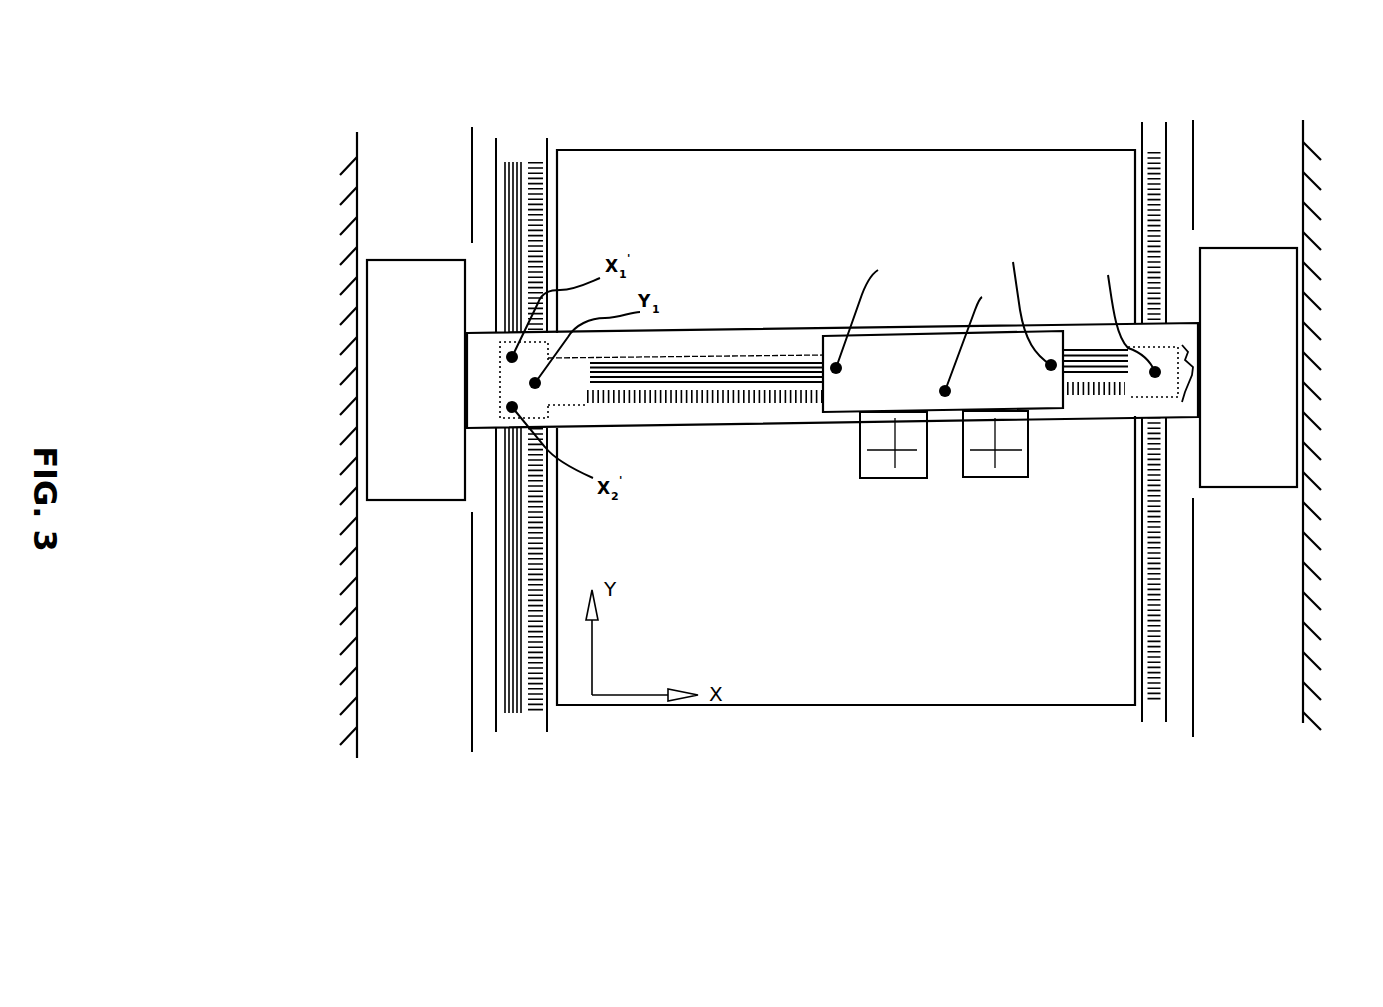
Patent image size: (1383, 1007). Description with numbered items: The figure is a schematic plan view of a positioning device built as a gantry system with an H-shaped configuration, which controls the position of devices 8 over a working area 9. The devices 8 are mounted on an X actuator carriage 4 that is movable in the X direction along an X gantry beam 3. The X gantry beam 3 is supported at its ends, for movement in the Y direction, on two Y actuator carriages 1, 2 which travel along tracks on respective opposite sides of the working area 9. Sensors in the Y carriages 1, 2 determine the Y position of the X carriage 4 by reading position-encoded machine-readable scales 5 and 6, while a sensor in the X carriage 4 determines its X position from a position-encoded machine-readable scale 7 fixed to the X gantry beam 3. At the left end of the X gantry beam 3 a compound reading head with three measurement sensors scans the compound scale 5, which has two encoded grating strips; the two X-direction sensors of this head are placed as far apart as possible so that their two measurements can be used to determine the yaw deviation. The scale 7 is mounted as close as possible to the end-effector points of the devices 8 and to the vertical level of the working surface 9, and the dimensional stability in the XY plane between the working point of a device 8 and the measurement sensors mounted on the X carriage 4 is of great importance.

The Y actuator carriage 1 is at (387, 463).
The Y actuator carriage 2 is at (1275, 445).
The X gantry beam 3 is at (750, 332).
The X actuator carriage 4 is at (898, 336).
The position-encoded machine-readable scale 5 is at (492, 132).
The position-encoded machine-readable scale 6 is at (1140, 118).
The position-encoded machine-readable scale 7 is at (1193, 367).
The devices 8 is at (900, 458).
The working area 9 is at (710, 220).